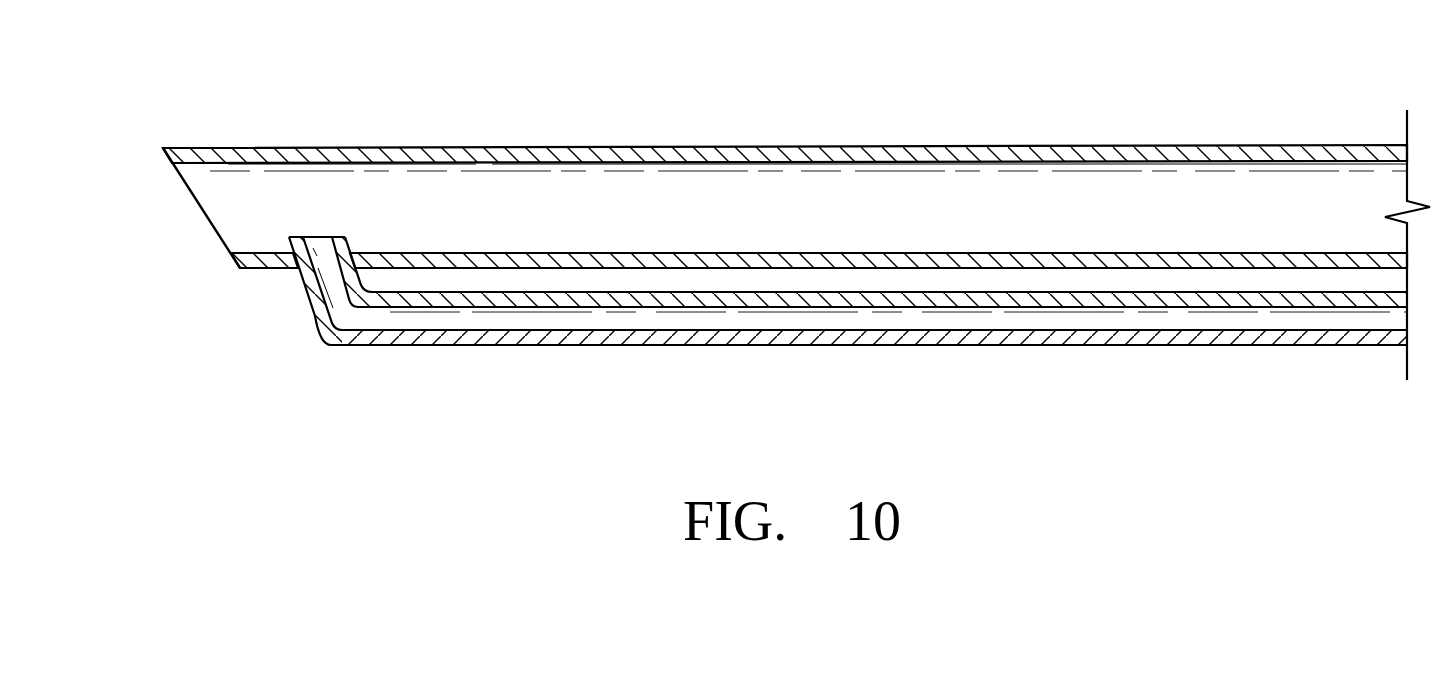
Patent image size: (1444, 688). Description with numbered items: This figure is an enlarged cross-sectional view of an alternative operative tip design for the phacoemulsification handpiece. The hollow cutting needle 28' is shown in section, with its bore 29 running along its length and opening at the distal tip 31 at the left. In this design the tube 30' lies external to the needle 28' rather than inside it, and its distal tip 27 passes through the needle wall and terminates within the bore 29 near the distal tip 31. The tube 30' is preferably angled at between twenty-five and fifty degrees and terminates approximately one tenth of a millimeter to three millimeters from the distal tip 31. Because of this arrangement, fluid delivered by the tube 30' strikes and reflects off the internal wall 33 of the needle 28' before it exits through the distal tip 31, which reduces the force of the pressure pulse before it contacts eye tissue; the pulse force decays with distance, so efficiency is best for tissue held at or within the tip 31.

The distal tip 27 is at (314, 237).
The needle 28' is at (785, 113).
The bore 29 is at (1017, 217).
The tube 30' is at (848, 335).
The distal tip 31 is at (163, 148).
The internal wall 33 is at (484, 164).